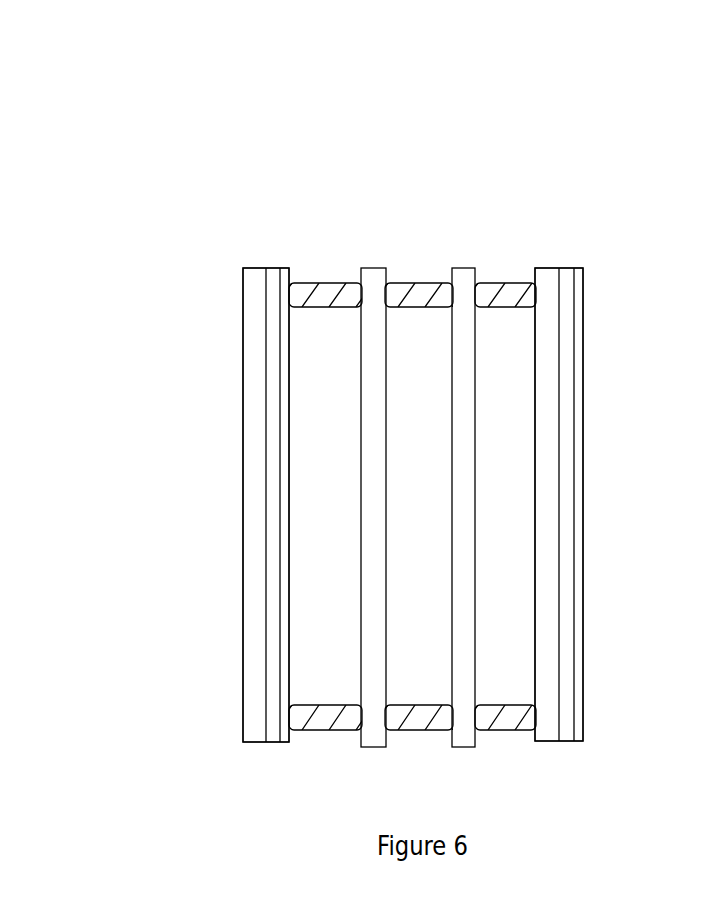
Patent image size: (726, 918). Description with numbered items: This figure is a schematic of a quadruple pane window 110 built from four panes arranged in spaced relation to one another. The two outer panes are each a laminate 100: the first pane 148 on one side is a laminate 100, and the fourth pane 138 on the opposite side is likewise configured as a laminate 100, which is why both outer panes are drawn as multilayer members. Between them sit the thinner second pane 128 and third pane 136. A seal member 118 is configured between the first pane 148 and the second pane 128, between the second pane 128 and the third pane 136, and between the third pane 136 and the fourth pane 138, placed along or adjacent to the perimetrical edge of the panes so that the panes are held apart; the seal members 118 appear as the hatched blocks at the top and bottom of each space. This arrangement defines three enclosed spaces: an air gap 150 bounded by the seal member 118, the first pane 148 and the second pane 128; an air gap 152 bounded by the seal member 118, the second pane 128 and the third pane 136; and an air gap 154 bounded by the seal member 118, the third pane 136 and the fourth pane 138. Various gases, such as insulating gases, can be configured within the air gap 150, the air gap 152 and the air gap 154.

The window 110 is at (498, 123).
The laminate 100 is at (255, 247).
The first pane 148 is at (222, 398).
The fourth pane 138 is at (607, 343).
The second pane 128 is at (373, 258).
The third pane 136 is at (467, 258).
The seal member 118 is at (327, 721).
The air gap 150 is at (307, 512).
The air gap 152 is at (401, 512).
The air gap 154 is at (491, 512).